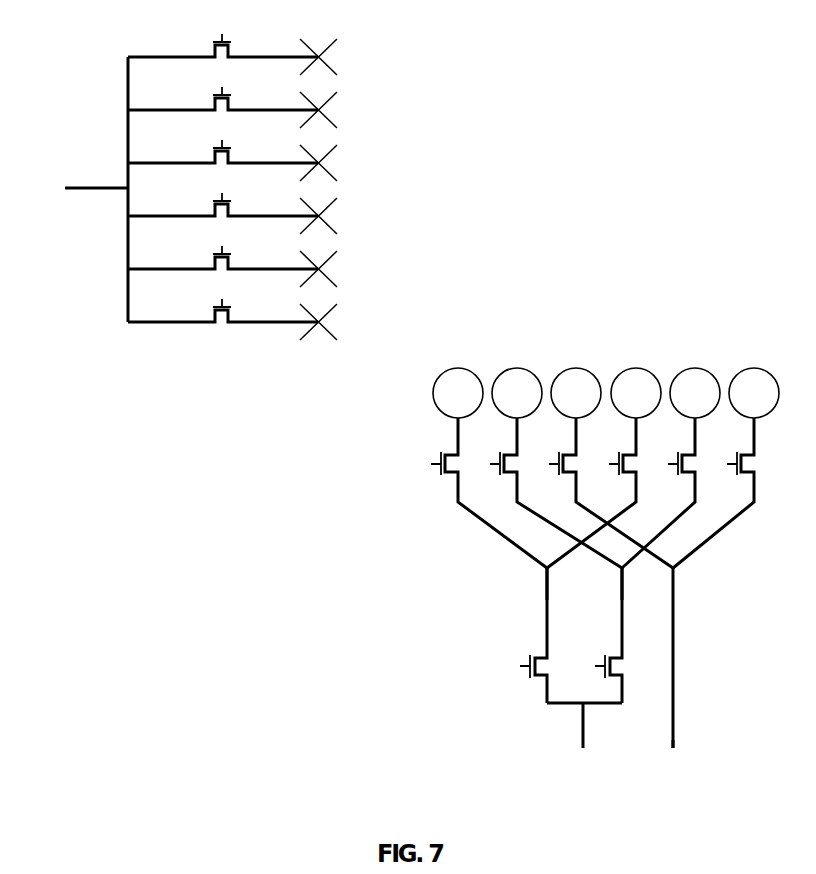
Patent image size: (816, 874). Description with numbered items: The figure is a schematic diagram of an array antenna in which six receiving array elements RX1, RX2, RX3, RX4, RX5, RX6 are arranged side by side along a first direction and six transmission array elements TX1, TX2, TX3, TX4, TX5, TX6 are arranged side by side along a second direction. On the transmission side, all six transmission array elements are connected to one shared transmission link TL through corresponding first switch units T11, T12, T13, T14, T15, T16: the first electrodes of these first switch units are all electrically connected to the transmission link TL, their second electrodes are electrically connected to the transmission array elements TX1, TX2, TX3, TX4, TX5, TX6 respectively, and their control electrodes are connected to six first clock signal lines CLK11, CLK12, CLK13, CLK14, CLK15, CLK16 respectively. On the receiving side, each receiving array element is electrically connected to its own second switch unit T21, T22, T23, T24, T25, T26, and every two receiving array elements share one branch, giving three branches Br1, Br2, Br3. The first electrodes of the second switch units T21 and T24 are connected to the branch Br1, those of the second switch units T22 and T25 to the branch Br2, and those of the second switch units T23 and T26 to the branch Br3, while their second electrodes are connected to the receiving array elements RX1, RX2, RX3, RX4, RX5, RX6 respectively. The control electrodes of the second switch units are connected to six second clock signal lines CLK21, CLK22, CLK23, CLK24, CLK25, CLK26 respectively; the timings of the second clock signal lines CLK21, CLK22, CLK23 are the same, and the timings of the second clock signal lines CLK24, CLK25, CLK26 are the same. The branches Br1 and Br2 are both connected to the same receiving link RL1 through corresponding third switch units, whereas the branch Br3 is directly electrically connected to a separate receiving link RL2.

The transmission link TL is at (83, 189).
The first switch unit T11 is at (223, 47).
The first switch unit T12 is at (223, 100).
The first switch unit T13 is at (223, 153).
The first switch unit T14 is at (223, 206).
The first switch unit T15 is at (223, 259).
The first switch unit T16 is at (223, 312).
The first clock signal line CLK11 is at (220, 27).
The first clock signal line CLK12 is at (220, 80).
The first clock signal line CLK13 is at (220, 133).
The first clock signal line CLK14 is at (220, 186).
The first clock signal line CLK15 is at (220, 239).
The first clock signal line CLK16 is at (220, 292).
The transmission array element TX1 is at (342, 57).
The transmission array element TX2 is at (342, 110).
The transmission array element TX3 is at (342, 163).
The transmission array element TX4 is at (342, 216).
The transmission array element TX5 is at (342, 269).
The transmission array element TX6 is at (342, 322).
The receiving array element RX1 is at (458, 379).
The receiving array element RX2 is at (517, 379).
The receiving array element RX3 is at (576, 379).
The receiving array element RX4 is at (636, 379).
The receiving array element RX5 is at (695, 379).
The receiving array element RX6 is at (754, 379).
The second switch unit T21 is at (489, 560).
The second switch unit T22 is at (556, 560).
The second switch unit T23 is at (611, 493).
The second switch unit T24 is at (591, 493).
The second switch unit T25 is at (658, 493).
The second switch unit T26 is at (713, 493).
The second clock signal line CLK21 is at (470, 560).
The second clock signal line CLK22 is at (537, 565).
The second clock signal line CLK23 is at (544, 462).
The second clock signal line CLK24 is at (604, 462).
The second clock signal line CLK25 is at (663, 462).
The second clock signal line CLK26 is at (722, 462).
The branch Br1 is at (524, 584).
The branch Br2 is at (599, 592).
The branch Br3 is at (658, 658).
The receiving link RL1 is at (584, 739).
The receiving link RL2 is at (670, 756).